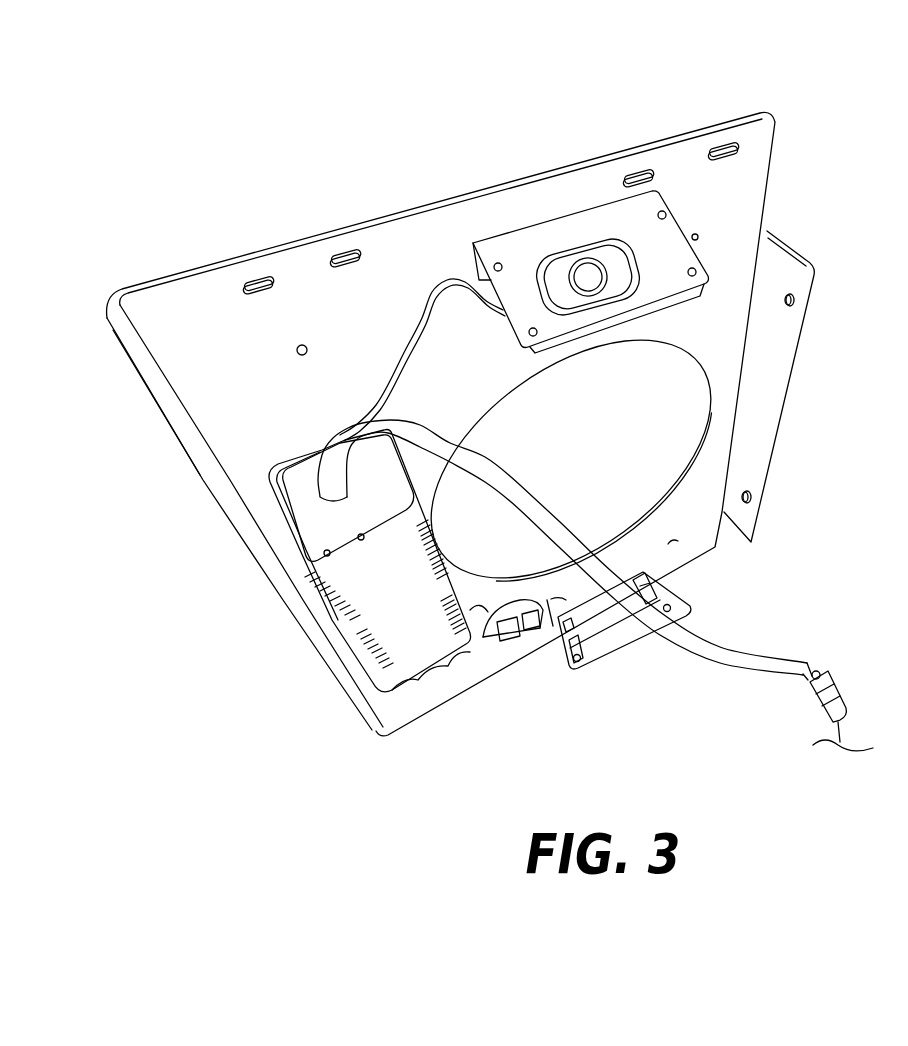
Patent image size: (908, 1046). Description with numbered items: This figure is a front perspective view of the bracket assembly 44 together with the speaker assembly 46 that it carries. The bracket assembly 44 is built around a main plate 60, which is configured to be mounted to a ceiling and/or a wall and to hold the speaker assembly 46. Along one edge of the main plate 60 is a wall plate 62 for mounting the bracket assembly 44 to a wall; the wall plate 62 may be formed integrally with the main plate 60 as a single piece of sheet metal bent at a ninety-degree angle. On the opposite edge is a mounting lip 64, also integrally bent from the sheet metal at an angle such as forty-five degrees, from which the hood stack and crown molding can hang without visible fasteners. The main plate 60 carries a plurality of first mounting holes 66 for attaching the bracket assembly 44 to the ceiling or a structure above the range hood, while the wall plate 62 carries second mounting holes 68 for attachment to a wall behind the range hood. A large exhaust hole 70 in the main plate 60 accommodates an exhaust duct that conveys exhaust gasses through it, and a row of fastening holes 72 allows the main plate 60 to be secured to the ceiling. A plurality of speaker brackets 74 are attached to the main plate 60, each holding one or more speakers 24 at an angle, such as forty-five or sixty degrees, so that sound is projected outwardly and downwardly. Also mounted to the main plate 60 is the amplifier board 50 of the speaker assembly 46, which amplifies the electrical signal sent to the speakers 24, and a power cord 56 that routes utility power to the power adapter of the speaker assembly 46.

The bracket assembly 44 is at (117, 206).
The speakers 24 is at (591, 248).
The speaker assembly 46 is at (537, 225).
The amplifier board 50 is at (388, 580).
The power cord 56 is at (338, 434).
The main plate 60 is at (470, 210).
The wall plate 62 is at (778, 367).
The mounting lip 64 is at (187, 430).
The first mounting holes 66 is at (296, 348).
The second mounting holes 68 is at (794, 301).
The exhaust hole 70 is at (563, 357).
The fastening holes 72 is at (252, 280).
The speaker brackets 74 is at (676, 287).